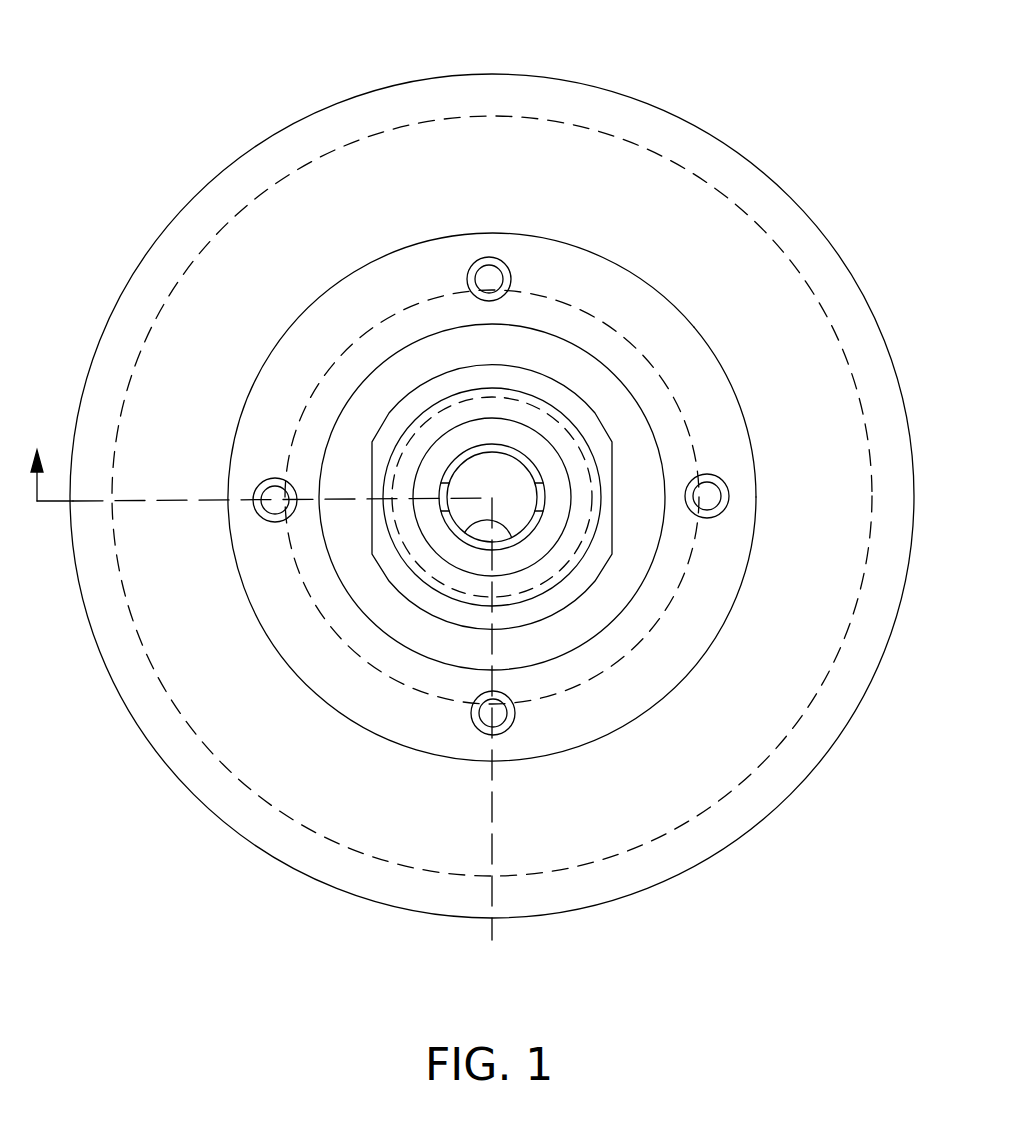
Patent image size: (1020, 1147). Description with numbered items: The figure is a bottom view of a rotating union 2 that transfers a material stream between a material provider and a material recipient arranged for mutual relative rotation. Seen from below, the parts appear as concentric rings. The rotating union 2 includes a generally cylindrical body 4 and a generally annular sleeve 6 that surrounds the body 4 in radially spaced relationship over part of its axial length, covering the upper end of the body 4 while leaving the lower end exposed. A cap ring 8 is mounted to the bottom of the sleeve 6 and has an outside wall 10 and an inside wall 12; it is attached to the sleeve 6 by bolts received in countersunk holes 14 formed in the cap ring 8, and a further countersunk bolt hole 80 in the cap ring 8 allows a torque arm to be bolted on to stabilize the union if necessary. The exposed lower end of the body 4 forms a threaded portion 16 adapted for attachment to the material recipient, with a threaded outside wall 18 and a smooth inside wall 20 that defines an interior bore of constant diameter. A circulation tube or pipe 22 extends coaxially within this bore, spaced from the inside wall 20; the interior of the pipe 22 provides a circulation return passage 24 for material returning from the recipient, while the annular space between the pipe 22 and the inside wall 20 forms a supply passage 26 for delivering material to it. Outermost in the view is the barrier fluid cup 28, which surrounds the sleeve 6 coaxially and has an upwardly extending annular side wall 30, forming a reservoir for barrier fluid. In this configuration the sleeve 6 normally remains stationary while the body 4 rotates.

The rotating union 2 is at (205, 117).
The body 4 is at (369, 398).
The sleeve 6 is at (673, 241).
The cap ring 8 is at (725, 331).
The outside wall 10 is at (739, 407).
The inside wall 12 is at (657, 548).
The countersunk holes 14 is at (502, 260).
The threaded portion 16 is at (591, 577).
The threaded outside wall 18 is at (540, 592).
The inside wall 20 is at (508, 577).
The circulation tube or pipe 22 is at (471, 536).
The circulation return passage 24 is at (457, 538).
The supply passage 26 is at (419, 533).
The barrier fluid cup 28 is at (375, 90).
The annular side wall 30 is at (440, 88).
The countersunk bolt hole 80 is at (261, 514).